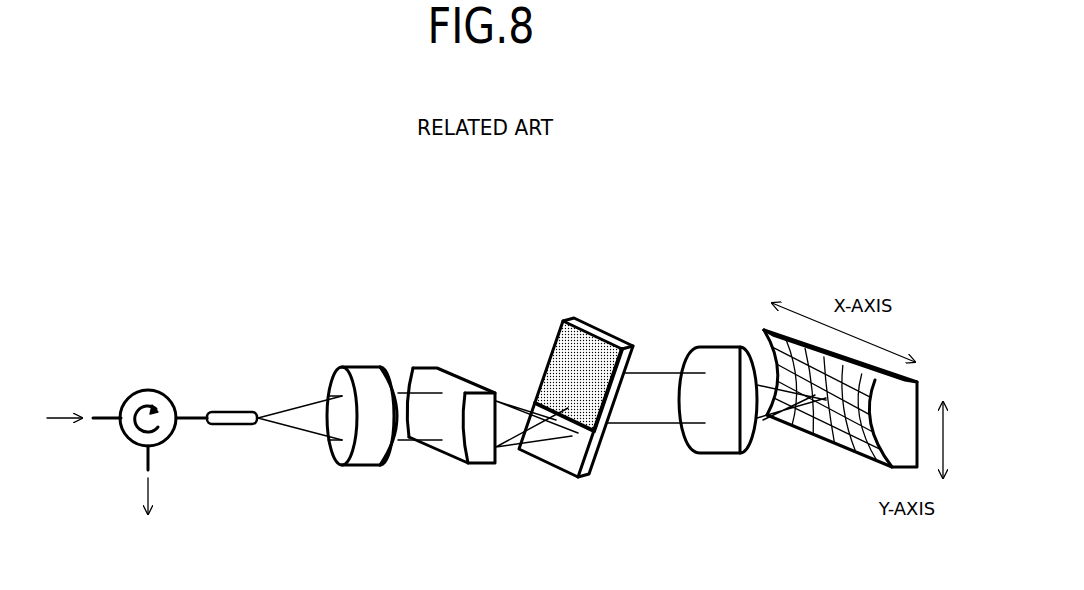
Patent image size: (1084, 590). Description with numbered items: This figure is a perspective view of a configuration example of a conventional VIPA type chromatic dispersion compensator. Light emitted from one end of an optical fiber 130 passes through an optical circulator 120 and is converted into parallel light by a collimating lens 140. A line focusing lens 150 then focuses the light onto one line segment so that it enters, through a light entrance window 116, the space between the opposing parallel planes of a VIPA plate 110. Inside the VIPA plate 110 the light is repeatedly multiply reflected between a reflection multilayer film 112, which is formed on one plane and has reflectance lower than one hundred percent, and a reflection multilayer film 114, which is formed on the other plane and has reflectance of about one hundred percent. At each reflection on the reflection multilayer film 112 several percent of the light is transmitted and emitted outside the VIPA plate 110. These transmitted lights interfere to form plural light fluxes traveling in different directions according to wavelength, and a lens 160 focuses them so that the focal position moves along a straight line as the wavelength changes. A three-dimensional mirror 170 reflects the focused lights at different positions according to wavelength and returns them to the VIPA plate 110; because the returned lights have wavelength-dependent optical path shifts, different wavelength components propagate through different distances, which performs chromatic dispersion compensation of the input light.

The VIPA plate 110 is at (582, 386).
The reflection multilayer film 112 is at (598, 455).
The reflection multilayer film 114 is at (560, 353).
The light entrance window 116 is at (557, 440).
The optical circulator 120 is at (148, 390).
The optical fiber 130 is at (228, 410).
The collimating lens 140 is at (350, 365).
The line focusing lens 150 is at (430, 368).
The lens 160 is at (725, 348).
The three-dimensional mirror 170 is at (827, 443).